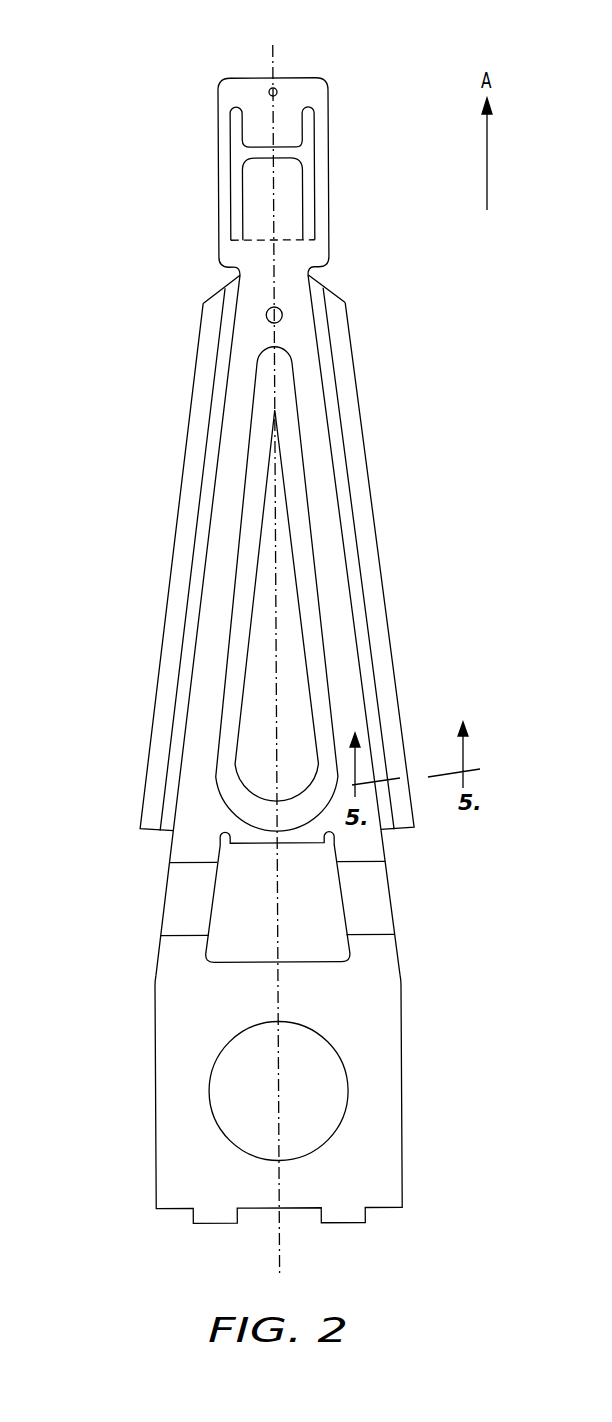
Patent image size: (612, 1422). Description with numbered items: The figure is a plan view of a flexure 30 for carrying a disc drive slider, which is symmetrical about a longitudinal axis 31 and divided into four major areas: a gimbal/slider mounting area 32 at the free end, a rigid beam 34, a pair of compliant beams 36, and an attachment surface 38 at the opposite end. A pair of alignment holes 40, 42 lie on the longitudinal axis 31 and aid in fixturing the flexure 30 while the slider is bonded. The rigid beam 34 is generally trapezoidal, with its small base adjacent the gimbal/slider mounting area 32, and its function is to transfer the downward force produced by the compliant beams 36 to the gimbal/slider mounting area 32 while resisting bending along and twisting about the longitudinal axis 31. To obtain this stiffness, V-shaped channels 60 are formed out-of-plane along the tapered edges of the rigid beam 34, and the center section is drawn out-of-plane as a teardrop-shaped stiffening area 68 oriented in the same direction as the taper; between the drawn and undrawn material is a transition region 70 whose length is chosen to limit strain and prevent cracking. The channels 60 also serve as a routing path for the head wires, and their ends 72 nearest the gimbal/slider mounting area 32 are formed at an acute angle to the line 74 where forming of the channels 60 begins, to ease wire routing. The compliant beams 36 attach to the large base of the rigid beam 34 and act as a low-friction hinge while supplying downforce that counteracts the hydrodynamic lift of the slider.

The flexure 30 is at (366, 67).
The longitudinal axis 31 is at (280, 1260).
The gimbal/slider mounting area 32 is at (73, 78).
The rigid beam 34 is at (103, 287).
The compliant beams 36 is at (133, 857).
The attachment surface 38 is at (78, 945).
The alignment hole 40 is at (269, 89).
The alignment hole 42 is at (282, 318).
The V-shaped channels 60 is at (210, 402).
The stiffening area 68 is at (298, 715).
The transition region 70 is at (315, 638).
The ends of the channels 72 is at (213, 293).
The line where forming of the channels begins 74 is at (232, 353).